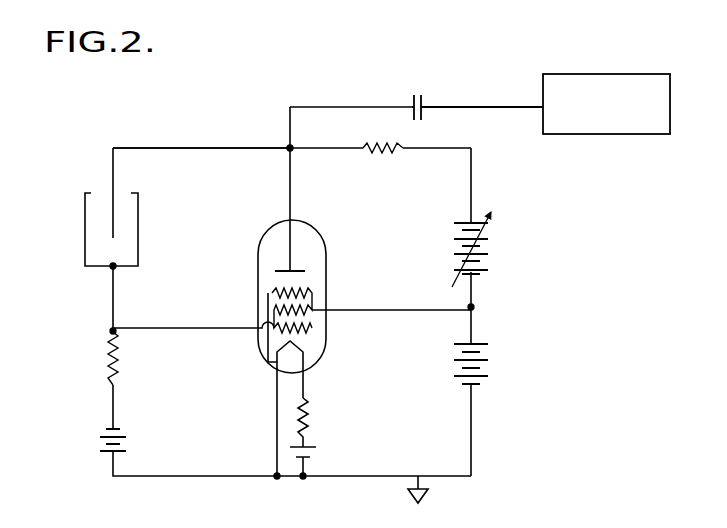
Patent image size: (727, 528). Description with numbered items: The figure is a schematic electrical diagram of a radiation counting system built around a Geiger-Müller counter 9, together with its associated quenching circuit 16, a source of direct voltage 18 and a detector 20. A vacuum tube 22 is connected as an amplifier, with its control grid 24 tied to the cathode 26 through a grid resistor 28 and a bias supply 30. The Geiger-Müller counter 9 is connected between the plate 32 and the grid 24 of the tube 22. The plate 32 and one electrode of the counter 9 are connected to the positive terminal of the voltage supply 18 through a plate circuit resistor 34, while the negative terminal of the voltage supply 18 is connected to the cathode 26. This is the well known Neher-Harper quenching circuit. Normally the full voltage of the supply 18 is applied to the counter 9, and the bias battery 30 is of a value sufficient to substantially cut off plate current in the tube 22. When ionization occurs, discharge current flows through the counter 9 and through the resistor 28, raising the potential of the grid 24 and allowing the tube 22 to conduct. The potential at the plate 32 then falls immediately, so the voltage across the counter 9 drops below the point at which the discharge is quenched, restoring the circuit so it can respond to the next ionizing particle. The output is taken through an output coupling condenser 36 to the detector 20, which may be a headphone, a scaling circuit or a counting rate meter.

The Geiger-Müller counter 9 is at (85, 225).
The quenching circuit 16 is at (262, 130).
The source of direct voltage 18 is at (490, 250).
The detector 20 is at (631, 134).
The vacuum tube 22 is at (327, 253).
The control grid 24 is at (312, 328).
The cathode 26 is at (277, 413).
The grid resistor 28 is at (113, 357).
The bias supply 30 is at (100, 436).
The plate 32 is at (292, 270).
The plate circuit resistor 34 is at (388, 152).
The output coupling condenser 36 is at (418, 93).